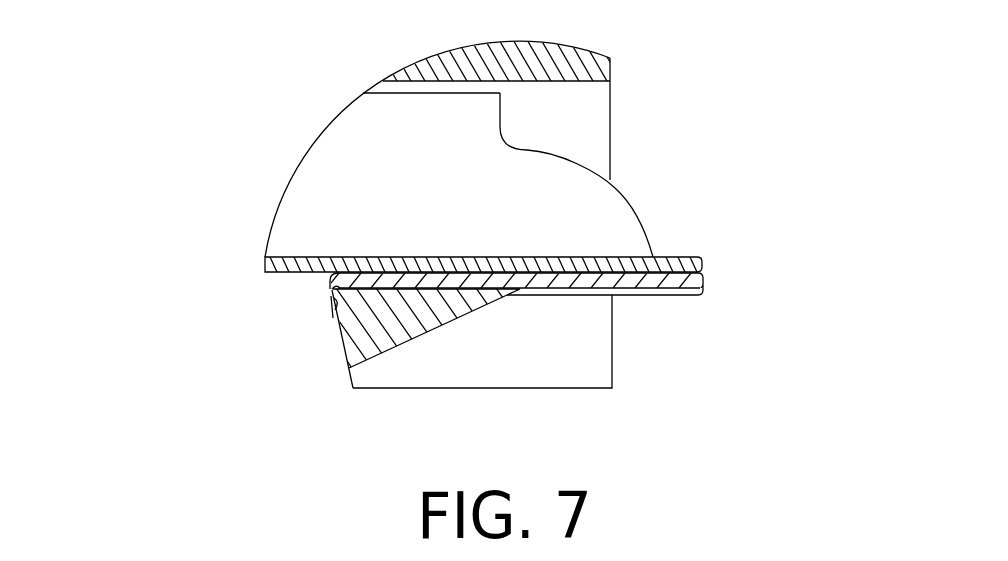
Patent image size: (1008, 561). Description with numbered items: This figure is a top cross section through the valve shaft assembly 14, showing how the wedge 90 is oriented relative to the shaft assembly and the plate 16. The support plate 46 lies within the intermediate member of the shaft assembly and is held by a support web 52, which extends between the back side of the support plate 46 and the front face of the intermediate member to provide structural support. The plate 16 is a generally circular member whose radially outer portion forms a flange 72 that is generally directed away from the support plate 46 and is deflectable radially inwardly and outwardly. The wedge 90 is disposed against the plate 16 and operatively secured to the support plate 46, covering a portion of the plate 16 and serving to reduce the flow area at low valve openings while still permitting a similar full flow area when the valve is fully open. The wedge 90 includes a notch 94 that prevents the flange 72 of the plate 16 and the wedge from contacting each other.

The valve shaft assembly 14 is at (707, 118).
The plate 16 is at (703, 282).
The support plate 46 is at (705, 265).
The support web 52 is at (620, 228).
The flange 72 is at (331, 284).
The wedge 90 is at (358, 338).
The notch 94 is at (327, 315).